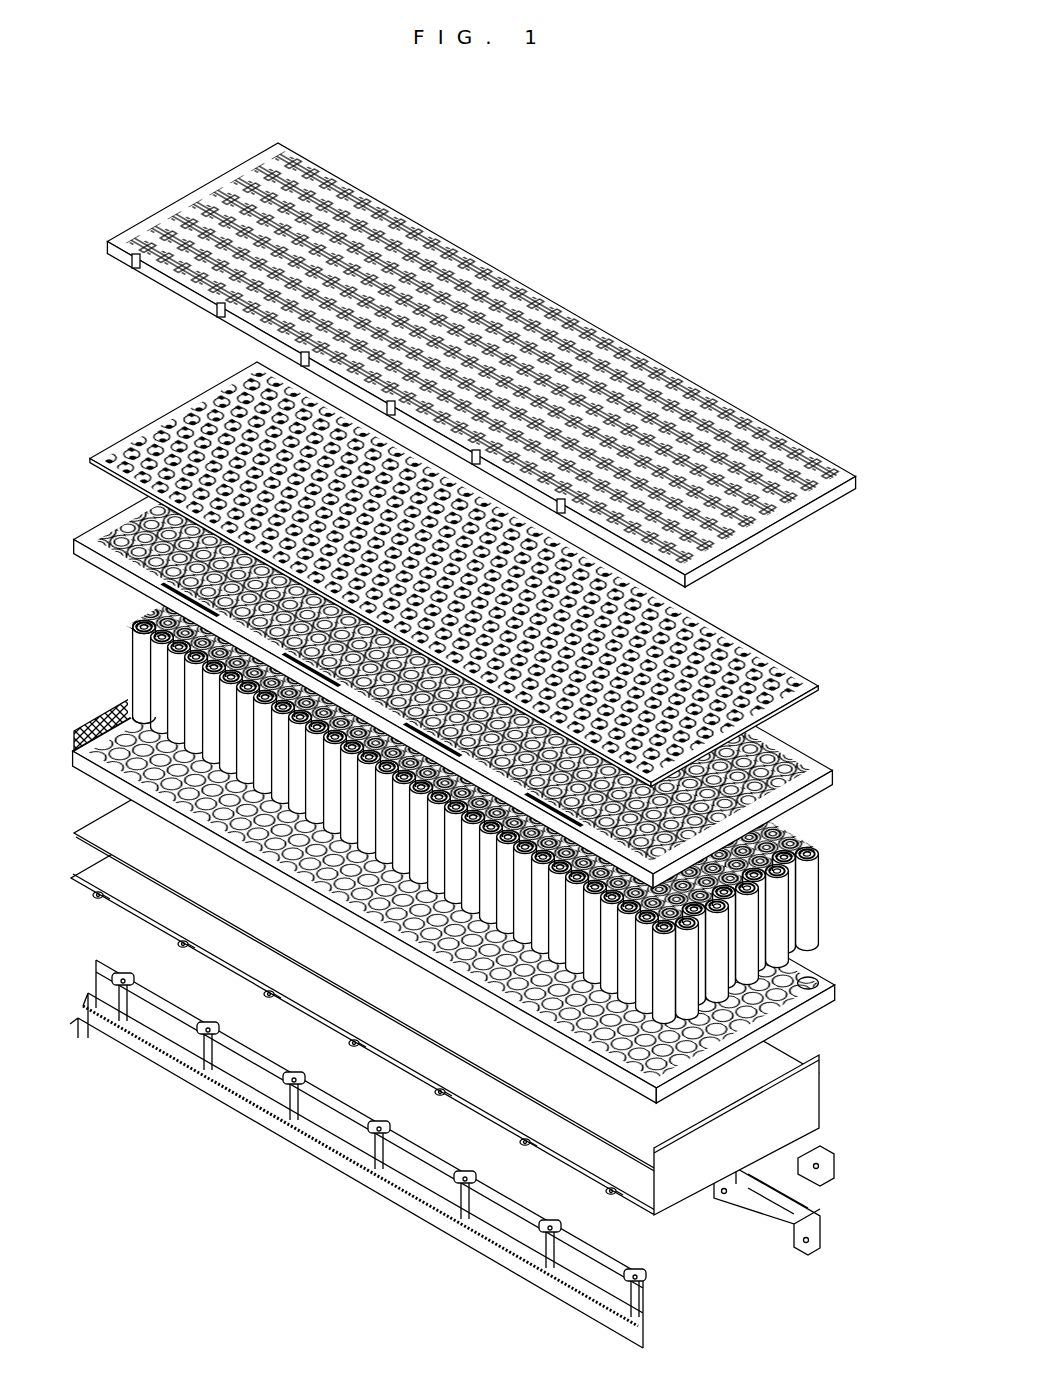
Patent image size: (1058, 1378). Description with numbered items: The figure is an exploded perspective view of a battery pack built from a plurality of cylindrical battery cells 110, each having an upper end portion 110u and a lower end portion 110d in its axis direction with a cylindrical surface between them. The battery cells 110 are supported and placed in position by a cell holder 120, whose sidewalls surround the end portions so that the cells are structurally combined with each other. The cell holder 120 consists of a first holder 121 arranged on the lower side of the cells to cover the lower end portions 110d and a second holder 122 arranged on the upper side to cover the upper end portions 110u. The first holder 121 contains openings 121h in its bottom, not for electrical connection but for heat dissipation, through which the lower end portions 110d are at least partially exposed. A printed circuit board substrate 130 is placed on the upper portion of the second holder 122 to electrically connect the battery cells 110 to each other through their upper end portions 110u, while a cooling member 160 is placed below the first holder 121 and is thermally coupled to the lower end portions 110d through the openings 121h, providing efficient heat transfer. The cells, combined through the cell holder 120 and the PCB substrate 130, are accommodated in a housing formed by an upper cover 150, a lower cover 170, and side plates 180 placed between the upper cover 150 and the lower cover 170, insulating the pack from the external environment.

The battery cell 110 is at (431, 781).
The upper end portion 110u is at (112, 615).
The lower end portion 110d is at (112, 710).
The cell holder 120 is at (491, 769).
The first holder 121 is at (484, 875).
The opening 121h is at (798, 975).
The second holder 122 is at (484, 662).
The printed circuit board substrate 130 is at (812, 678).
The upper cover 150 is at (826, 476).
The cooling member 160 is at (100, 833).
The lower cover 170 is at (130, 903).
The side plate 180 is at (632, 1293).